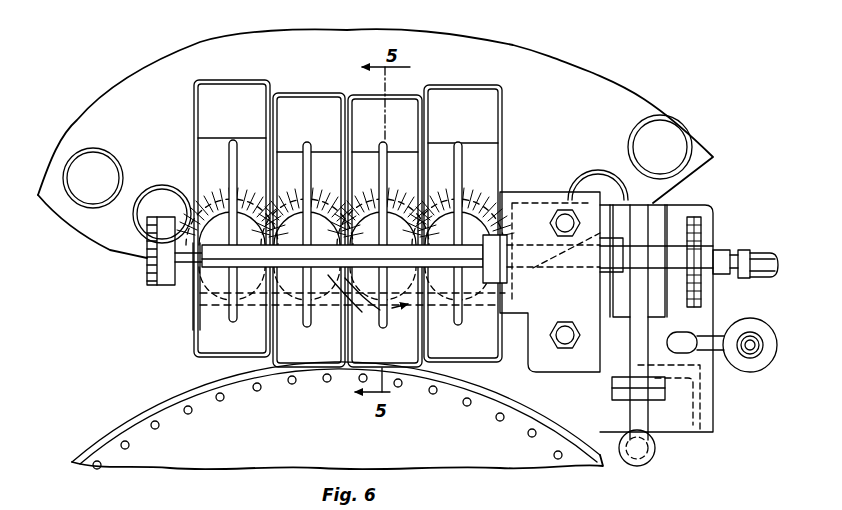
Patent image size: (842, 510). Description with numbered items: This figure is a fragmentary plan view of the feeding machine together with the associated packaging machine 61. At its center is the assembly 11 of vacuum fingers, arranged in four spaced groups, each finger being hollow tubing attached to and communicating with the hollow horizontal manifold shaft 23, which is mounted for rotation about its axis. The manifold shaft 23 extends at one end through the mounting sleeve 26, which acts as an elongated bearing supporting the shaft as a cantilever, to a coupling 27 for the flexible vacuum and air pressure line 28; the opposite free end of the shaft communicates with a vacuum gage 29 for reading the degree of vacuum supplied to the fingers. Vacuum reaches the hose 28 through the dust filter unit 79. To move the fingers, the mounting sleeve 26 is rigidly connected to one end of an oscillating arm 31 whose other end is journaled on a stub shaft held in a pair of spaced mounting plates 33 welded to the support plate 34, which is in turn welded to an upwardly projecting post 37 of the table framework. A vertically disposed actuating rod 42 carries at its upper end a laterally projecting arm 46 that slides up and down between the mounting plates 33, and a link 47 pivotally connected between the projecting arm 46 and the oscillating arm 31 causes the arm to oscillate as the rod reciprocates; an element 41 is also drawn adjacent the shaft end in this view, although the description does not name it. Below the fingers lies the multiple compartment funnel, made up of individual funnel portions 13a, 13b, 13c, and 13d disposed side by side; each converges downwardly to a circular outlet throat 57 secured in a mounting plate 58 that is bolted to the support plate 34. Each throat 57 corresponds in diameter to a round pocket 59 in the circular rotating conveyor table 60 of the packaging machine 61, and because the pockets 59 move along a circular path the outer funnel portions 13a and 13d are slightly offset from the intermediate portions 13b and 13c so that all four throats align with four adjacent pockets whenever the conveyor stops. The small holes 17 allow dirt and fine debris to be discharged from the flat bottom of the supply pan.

The assembly of vacuum fingers 11 is at (450, 140).
The funnel portion 13a is at (230, 357).
The funnel portion 13b is at (285, 368).
The funnel portion 13c is at (413, 370).
The funnel portion 13d is at (483, 363).
The small holes 17 is at (220, 401).
The manifold shaft 23 is at (215, 268).
The mounting sleeve 26 is at (568, 280).
The coupling 27 is at (727, 250).
The vacuum and air pressure line 28 is at (768, 277).
The vacuum gage 29 is at (147, 283).
The oscillating arm 31 is at (600, 233).
The mounting plates 33 is at (657, 212).
The support plate 34 is at (682, 428).
The post 37 is at (707, 402).
The sprocket 41 is at (700, 227).
The actuating rod 42 is at (651, 464).
The projecting arm 46 is at (643, 413).
The link 47 is at (643, 343).
The outlet throat 57 is at (345, 280).
The mounting plate 58 is at (528, 192).
The pocket 59 is at (107, 193).
The conveyor table 60 is at (537, 80).
The packaging machine 61 is at (647, 81).
The dust filter unit 79 is at (758, 373).